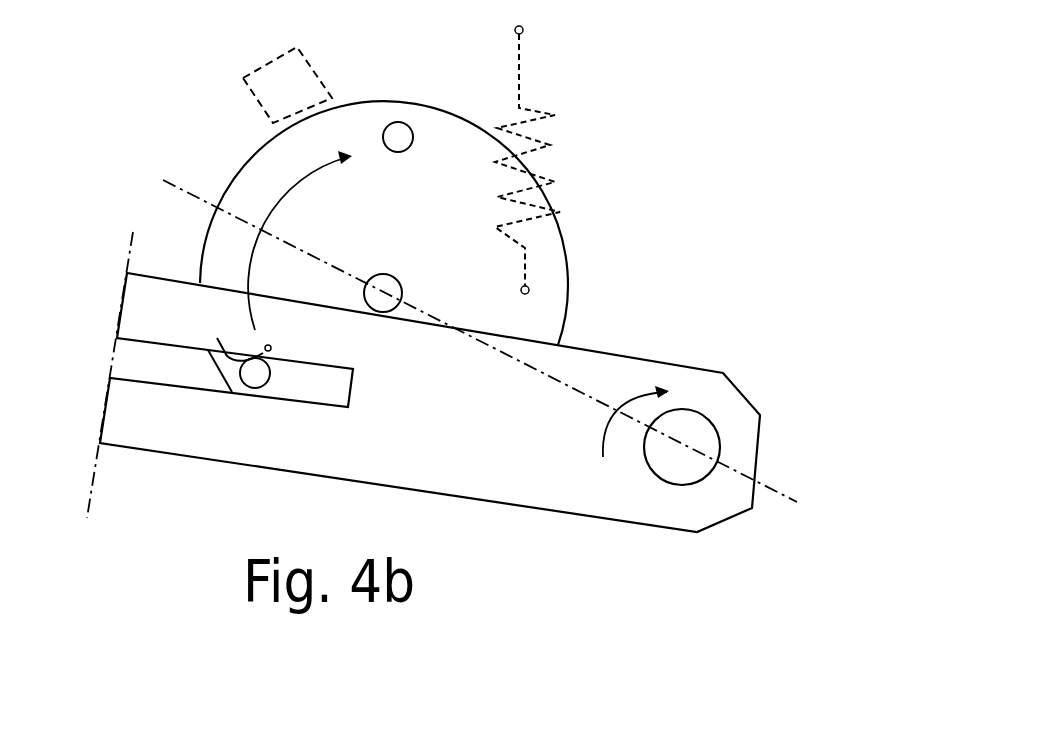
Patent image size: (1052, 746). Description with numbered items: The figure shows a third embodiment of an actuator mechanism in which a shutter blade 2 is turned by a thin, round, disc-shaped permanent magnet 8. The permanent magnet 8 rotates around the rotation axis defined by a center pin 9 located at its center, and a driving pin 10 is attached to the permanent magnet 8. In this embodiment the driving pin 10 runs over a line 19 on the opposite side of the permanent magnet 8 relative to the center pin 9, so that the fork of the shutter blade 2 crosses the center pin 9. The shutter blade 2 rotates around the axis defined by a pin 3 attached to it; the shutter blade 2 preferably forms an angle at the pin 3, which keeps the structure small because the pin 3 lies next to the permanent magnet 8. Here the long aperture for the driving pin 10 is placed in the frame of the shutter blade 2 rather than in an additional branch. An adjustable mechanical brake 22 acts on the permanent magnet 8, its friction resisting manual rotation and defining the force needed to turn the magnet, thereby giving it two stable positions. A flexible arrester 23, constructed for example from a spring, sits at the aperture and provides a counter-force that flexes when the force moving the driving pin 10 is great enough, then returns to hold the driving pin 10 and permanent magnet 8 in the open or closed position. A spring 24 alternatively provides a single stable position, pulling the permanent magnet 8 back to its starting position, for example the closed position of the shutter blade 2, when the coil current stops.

The shutter blade 2 is at (615, 385).
The pin 3 is at (682, 455).
The permanent magnet 8 is at (232, 252).
The center pin 9 is at (391, 277).
The driving pin 10 is at (255, 378).
The line 19 is at (197, 197).
The mechanical brake 22 is at (288, 95).
The flexible arrester 23 is at (263, 347).
The spring 24 is at (538, 110).